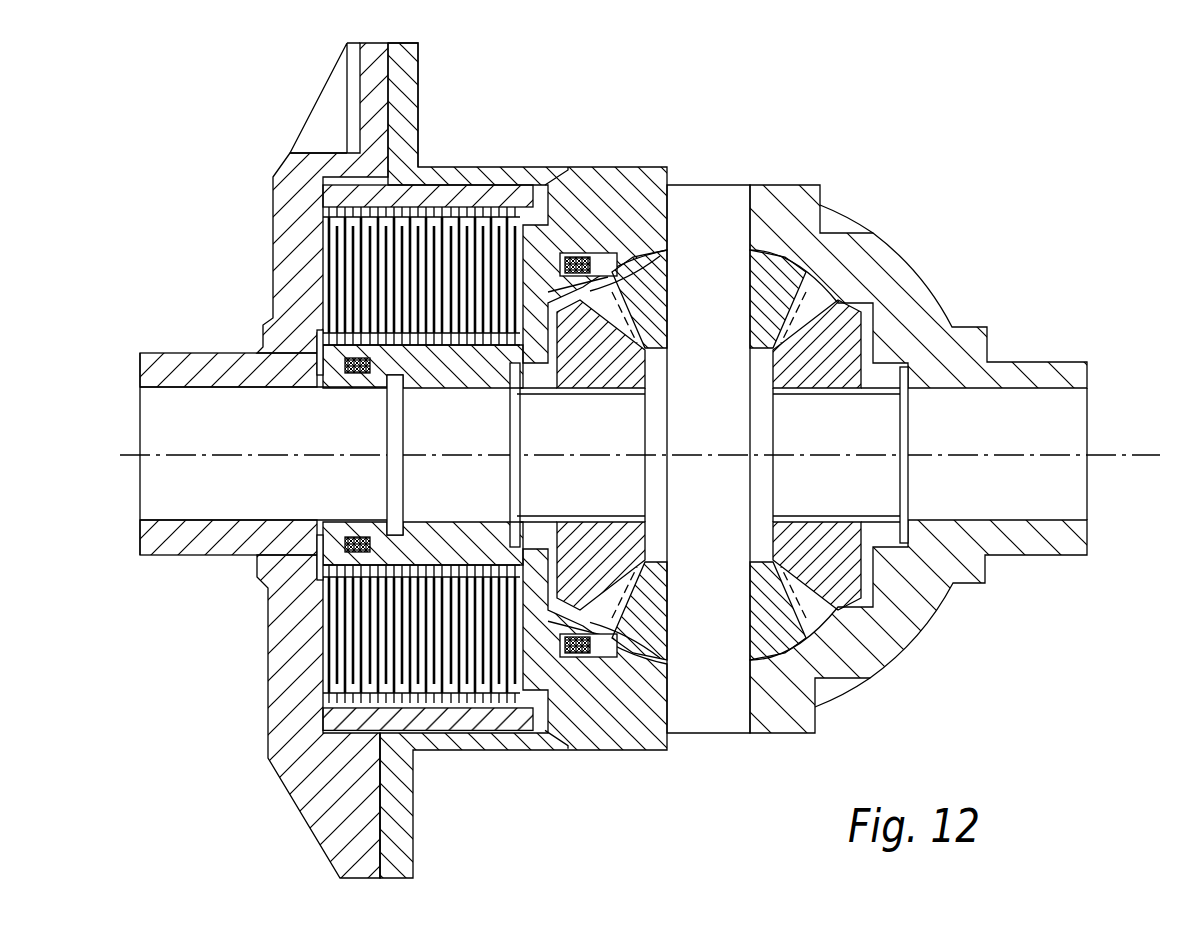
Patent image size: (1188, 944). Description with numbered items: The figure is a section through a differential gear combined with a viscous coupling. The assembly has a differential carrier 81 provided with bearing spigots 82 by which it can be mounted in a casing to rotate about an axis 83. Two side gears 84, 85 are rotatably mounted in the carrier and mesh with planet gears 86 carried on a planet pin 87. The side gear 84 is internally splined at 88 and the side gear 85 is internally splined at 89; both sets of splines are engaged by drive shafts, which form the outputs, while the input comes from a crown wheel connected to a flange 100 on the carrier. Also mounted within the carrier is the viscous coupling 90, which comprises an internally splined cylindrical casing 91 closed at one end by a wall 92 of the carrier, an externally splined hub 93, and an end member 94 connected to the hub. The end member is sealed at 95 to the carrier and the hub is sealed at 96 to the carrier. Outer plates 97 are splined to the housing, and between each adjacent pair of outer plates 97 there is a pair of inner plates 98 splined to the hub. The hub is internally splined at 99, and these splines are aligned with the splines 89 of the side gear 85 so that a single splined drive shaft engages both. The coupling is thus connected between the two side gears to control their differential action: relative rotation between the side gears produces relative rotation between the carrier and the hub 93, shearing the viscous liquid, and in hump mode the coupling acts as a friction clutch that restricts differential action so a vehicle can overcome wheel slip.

The differential carrier 81 is at (790, 200).
The bearing spigots 82 is at (192, 352).
The axis 83 is at (1104, 456).
The side gear 84 is at (882, 303).
The side gear 85 is at (596, 546).
The planet gears 86 is at (650, 290).
The planet pin 87 is at (714, 712).
The internal splines 88 is at (839, 396).
The internal splines 89 is at (595, 393).
The viscous coupling 90 is at (488, 183).
The cylindrical casing 91 is at (515, 195).
The wall 92 is at (270, 233).
The hub 93 is at (489, 382).
The end member 94 is at (577, 250).
The seal 95 is at (589, 258).
The seal 96 is at (348, 376).
The outer plates 97 is at (455, 213).
The inner plates 98 is at (448, 330).
The internal splines 99 is at (468, 397).
The flange 100 is at (408, 93).